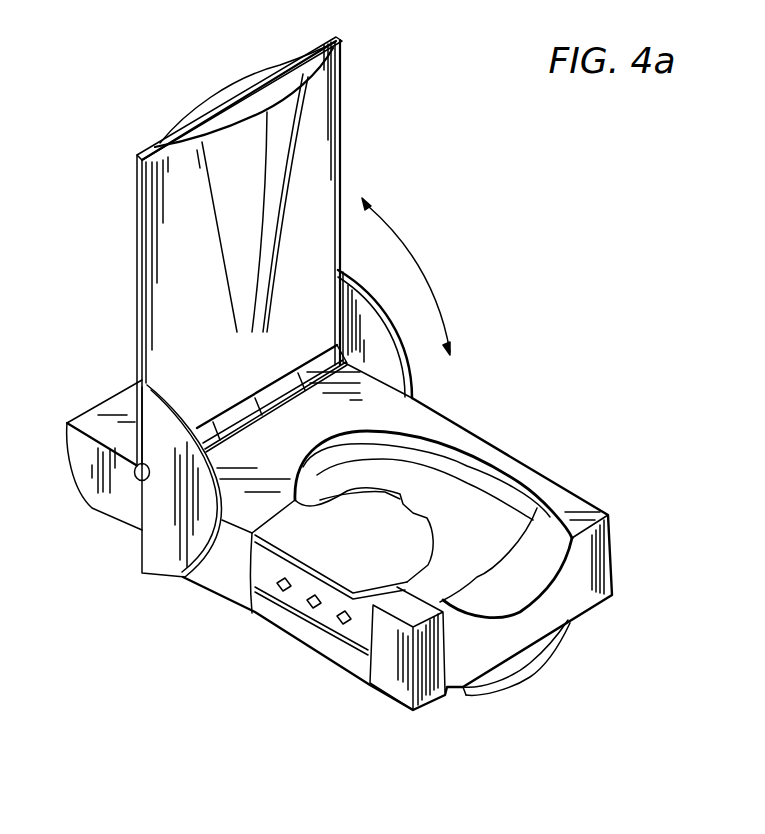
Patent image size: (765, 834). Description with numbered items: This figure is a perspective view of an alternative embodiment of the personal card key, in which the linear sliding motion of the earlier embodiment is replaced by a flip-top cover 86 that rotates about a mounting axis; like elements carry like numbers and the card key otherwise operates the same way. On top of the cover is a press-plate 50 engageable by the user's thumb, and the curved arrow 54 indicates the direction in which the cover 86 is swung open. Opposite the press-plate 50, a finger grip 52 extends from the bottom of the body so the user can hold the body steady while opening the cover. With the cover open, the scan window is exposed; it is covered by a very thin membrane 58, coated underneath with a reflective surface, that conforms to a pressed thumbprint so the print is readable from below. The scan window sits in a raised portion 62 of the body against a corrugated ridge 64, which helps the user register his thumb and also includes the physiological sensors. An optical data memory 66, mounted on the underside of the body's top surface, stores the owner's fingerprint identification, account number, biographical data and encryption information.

The press-plate 50 is at (268, 85).
The flip-top cover 86 is at (335, 141).
The arrow 54 is at (417, 258).
The raised portion 62 is at (338, 435).
The membrane 58 is at (455, 488).
The corrugated ridge 64 is at (545, 535).
The optical data memory 66 is at (340, 555).
The finger grip 52 is at (492, 697).